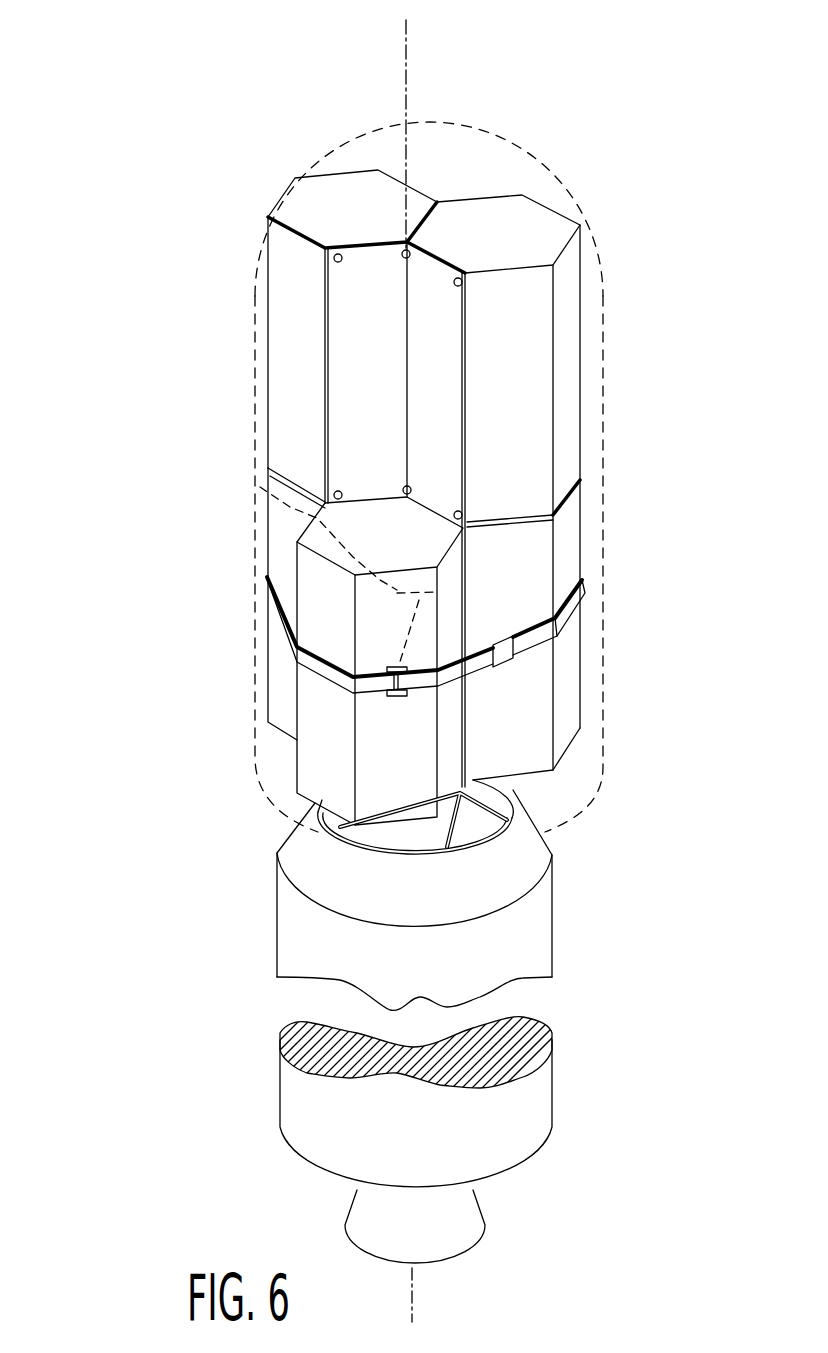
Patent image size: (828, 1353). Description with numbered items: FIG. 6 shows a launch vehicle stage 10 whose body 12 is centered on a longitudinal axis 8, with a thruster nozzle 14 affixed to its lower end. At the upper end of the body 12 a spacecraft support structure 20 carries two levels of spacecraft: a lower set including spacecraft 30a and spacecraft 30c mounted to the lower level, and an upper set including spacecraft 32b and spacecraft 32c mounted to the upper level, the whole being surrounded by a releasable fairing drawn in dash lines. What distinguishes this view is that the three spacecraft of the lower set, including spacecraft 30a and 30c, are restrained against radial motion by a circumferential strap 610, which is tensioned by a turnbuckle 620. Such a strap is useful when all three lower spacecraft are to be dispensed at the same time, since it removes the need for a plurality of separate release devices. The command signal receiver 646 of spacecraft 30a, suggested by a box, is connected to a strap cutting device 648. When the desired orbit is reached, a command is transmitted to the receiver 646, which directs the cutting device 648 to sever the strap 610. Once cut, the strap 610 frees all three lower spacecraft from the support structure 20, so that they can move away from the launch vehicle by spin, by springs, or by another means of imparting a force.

The longitudinal axis 8 is at (413, 1295).
The launch vehicle stage 10 is at (598, 1077).
The body 12 is at (543, 942).
The thruster nozzle 14 is at (358, 1207).
The spacecraft support structure 20 is at (352, 380).
The spacecraft 30a is at (300, 772).
The spacecraft 30c is at (277, 663).
The spacecraft 32b is at (288, 250).
The spacecraft 32c is at (535, 318).
The circumferential strap 610 is at (543, 643).
The turnbuckle 620 is at (500, 655).
The command signal receiver 646 is at (260, 487).
The strap cutting device 648 is at (393, 667).